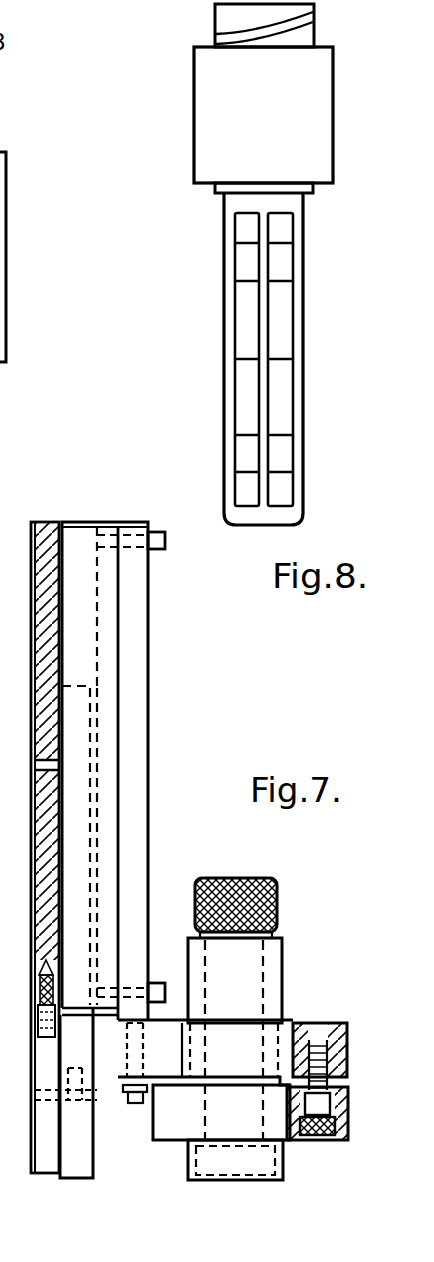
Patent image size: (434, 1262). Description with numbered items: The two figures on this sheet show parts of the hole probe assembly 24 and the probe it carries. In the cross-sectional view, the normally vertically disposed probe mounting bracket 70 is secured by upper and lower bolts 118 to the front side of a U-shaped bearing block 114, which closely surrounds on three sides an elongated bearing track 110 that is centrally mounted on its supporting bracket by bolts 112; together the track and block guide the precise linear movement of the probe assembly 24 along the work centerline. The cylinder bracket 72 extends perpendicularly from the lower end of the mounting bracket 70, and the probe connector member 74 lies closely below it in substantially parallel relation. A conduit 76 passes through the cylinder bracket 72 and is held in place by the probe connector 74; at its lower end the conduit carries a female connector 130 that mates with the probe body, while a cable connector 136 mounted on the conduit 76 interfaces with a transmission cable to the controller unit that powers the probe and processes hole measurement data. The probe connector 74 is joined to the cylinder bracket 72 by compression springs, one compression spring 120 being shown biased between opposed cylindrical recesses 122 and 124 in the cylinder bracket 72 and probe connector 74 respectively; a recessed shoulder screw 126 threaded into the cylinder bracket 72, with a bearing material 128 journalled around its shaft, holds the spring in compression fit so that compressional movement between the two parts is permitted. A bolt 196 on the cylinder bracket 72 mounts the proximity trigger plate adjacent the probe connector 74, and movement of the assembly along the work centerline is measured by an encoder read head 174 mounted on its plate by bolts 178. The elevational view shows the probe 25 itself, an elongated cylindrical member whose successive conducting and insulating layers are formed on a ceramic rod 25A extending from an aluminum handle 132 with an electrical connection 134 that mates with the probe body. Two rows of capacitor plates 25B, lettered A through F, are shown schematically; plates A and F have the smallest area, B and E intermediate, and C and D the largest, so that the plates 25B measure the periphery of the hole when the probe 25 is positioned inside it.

In FIG. 7, the hole probe assembly 24 is at (305, 915).
In FIG. 8, the probe 25 is at (224, 336).
In FIG. 8, the ceramic rod 25A is at (295, 515).
In FIG. 8, the capacitor plates 25B is at (292, 443).
In FIG. 7, the probe mounting bracket 70 is at (135, 680).
In FIG. 7, the cylinder bracket 72 is at (163, 1037).
In FIG. 7, the probe connector member 74 is at (170, 1132).
In FIG. 7, the conduit 76 is at (283, 957).
In FIG. 7, the bearing track 110 is at (78, 835).
In FIG. 7, the bolts 112 is at (40, 763).
In FIG. 7, the bearing block 114 is at (81, 646).
In FIG. 7, the bolts 118 is at (157, 530).
In FIG. 7, the compression spring 120 is at (356, 1060).
In FIG. 7, the cylindrical recess 122 is at (334, 1021).
In FIG. 7, the cylindrical recess 124 is at (347, 1100).
In FIG. 7, the shoulder screw 126 is at (290, 1122).
In FIG. 7, the bearing material 128 is at (290, 1097).
In FIG. 7, the female connector 130 is at (190, 1160).
In FIG. 8, the aluminum handle 132 is at (208, 94).
In FIG. 8, the electrical connection 134 is at (212, 15).
In FIG. 7, the cable connector 136 is at (274, 846).
In FIG. 7, the encoder read head 174 is at (106, 1078).
In FIG. 8, the bolts 178 is at (6, 230).
In FIG. 7, the bolts 178 is at (29, 847).
In FIG. 7, the bolt 196 is at (146, 1101).